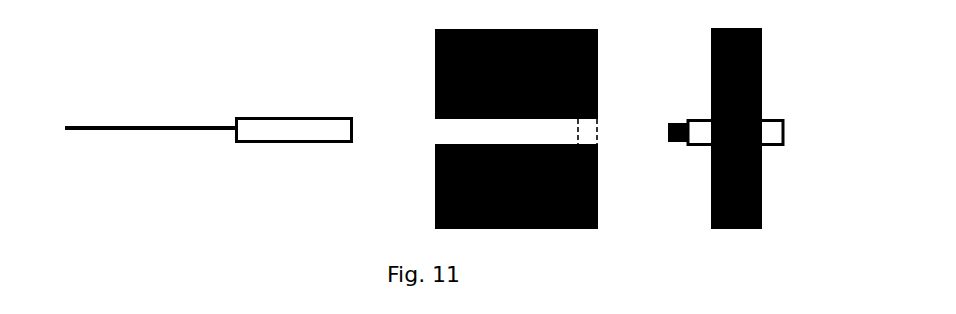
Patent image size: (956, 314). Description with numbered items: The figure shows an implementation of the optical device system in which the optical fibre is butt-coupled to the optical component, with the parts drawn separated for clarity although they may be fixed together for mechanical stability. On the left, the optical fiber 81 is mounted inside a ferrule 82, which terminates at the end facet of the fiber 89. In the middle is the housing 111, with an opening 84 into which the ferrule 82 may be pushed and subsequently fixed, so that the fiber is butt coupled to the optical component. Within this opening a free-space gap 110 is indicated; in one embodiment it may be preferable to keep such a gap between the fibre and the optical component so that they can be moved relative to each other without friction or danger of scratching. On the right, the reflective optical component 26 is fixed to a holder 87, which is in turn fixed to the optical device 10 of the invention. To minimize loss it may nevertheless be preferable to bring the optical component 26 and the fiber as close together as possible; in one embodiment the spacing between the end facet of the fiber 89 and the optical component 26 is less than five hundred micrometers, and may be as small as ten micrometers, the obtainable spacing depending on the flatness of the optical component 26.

The optical fiber 81 is at (138, 137).
The ferrule 82 is at (295, 136).
The end facet of the fiber 89 is at (343, 143).
The opening 84 is at (427, 137).
The free-space gap 110 is at (593, 137).
The housing 111 is at (503, 233).
The holder 87 is at (783, 153).
The optical device 10 is at (730, 230).
The reflective optical component 26 is at (672, 115).